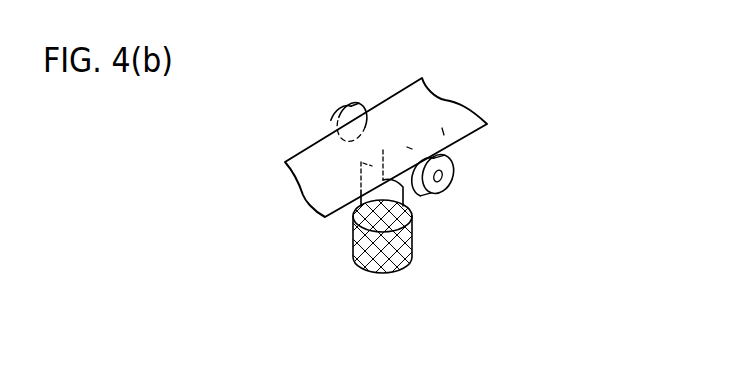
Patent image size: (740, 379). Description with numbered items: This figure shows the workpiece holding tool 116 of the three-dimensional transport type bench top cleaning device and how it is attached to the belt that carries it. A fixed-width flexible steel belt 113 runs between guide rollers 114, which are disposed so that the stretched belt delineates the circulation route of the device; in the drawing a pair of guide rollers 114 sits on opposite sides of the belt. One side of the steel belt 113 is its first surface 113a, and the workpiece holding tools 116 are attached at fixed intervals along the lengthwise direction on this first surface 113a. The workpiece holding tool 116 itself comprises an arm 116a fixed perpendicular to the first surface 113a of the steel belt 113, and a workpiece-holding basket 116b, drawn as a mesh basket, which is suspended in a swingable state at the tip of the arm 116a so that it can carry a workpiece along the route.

The steel belt 113 is at (412, 108).
The first surface 113a is at (453, 152).
The guide roller 114 is at (340, 107).
The workpiece holding tool 116 is at (434, 235).
The arm 116a is at (409, 195).
The workpiece-holding basket 116b is at (412, 252).